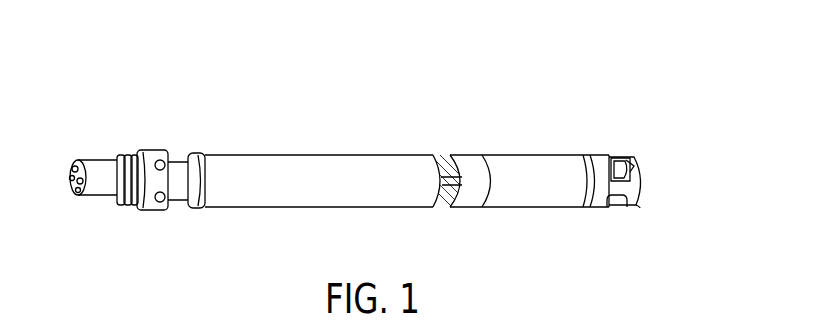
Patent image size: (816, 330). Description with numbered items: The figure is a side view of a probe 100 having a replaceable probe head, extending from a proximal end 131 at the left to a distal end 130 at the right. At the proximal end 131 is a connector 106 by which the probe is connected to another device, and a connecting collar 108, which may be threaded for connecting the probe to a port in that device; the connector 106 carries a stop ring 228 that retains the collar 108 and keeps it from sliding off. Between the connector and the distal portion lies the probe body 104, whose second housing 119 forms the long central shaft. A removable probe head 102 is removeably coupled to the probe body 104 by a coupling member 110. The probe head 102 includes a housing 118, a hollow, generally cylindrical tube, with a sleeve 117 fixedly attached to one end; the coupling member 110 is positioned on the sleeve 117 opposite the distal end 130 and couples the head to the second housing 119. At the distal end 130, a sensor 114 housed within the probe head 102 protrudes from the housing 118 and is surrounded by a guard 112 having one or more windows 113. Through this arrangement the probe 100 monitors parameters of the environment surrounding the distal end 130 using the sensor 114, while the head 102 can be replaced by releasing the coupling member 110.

The probe 100 is at (466, 91).
The removable probe head 102 is at (539, 144).
The probe body 104 is at (303, 146).
The connector 106 is at (97, 165).
The connecting collar 108 is at (150, 153).
The coupling member 110 is at (447, 203).
The guard 112 is at (609, 157).
The windows 113 is at (630, 168).
The sensor 114 is at (638, 163).
The sleeve 117 is at (475, 203).
The housing 118 is at (543, 203).
The second housing 119 is at (330, 203).
The distal end 130 is at (636, 210).
The proximal end 131 is at (93, 200).
The stop ring 228 is at (118, 203).